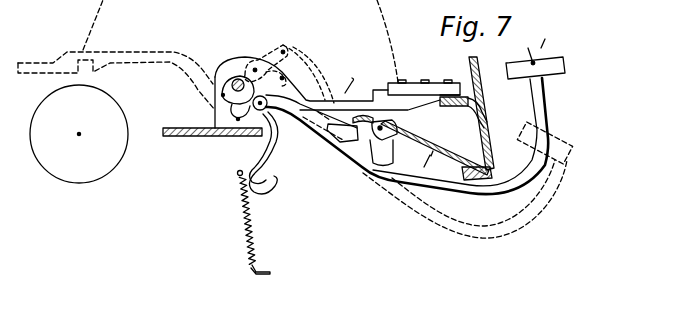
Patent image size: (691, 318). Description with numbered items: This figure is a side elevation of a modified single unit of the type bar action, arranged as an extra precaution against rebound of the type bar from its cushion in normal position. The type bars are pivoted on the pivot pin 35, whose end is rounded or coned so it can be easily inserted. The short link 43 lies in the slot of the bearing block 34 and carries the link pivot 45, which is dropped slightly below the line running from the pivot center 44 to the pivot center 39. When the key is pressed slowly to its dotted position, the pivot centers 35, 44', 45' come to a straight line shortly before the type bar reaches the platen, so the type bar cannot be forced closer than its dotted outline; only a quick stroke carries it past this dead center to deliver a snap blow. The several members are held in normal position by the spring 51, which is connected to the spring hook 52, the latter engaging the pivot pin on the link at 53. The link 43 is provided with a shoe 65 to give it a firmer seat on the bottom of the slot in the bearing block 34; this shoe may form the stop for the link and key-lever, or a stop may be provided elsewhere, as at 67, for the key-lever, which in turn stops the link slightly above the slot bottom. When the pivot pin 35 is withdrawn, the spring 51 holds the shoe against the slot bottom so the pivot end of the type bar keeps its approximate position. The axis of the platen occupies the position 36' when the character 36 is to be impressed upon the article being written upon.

The platen axis position 36' is at (79, 134).
The character 36 is at (239, 55).
The pivot pin 35 is at (337, 70).
The bearing block 34 is at (214, 116).
The link 43 is at (200, 131).
The pivot center 44 is at (208, 91).
The pin in dotted position 44' is at (289, 61).
The link pivot in dotted position 45' is at (289, 53).
The shoe 65 is at (230, 122).
The pivot pin on the link 53 is at (238, 121).
The link pivot 45 is at (305, 118).
The spring hook 52 is at (275, 157).
The spring 51 is at (253, 236).
The pivot center 39 is at (385, 141).
The stop 67 is at (470, 181).